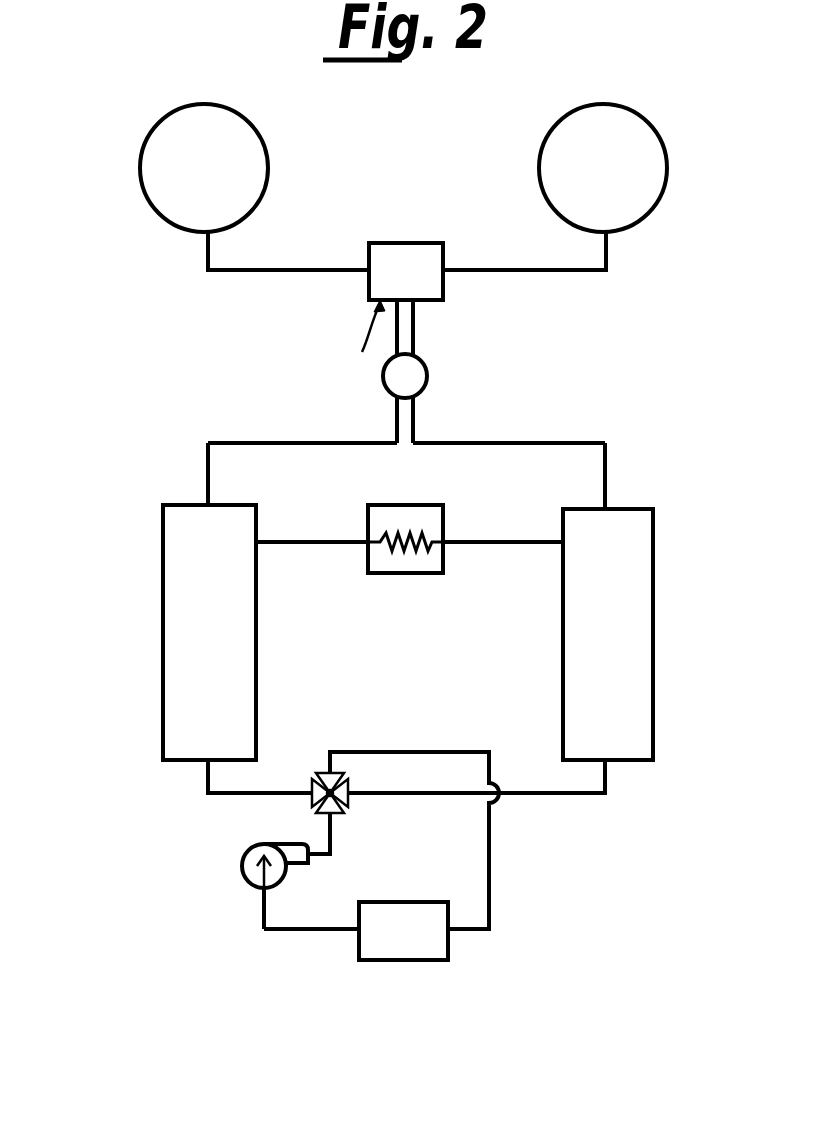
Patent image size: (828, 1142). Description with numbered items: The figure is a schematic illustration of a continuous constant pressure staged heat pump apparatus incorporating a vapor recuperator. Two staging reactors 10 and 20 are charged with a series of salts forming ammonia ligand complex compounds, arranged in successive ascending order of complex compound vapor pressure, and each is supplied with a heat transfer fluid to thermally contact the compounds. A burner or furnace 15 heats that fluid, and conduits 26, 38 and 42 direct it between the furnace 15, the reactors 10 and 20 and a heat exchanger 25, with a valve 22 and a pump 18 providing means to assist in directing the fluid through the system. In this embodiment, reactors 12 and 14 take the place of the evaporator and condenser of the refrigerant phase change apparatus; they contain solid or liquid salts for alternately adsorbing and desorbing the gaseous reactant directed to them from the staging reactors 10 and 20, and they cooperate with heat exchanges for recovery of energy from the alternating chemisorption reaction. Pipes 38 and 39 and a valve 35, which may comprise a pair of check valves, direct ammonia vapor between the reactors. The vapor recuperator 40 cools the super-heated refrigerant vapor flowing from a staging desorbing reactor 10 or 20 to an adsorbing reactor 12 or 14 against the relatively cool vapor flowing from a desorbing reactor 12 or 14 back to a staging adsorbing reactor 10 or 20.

The reactor 10 is at (653, 534).
The reactor 12 is at (140, 153).
The reactor 14 is at (667, 160).
The furnace 15 is at (445, 958).
The pump 18 is at (243, 866).
The reactor 20 is at (163, 530).
The valve 22 is at (345, 802).
The heat exchanger 25 is at (397, 573).
The conduit 26 is at (607, 780).
The valve 35 is at (427, 370).
The conduit 38 is at (322, 271).
The pipe 39 is at (513, 271).
The vapor recuperator 40 is at (393, 243).
The conduit 42 is at (206, 775).